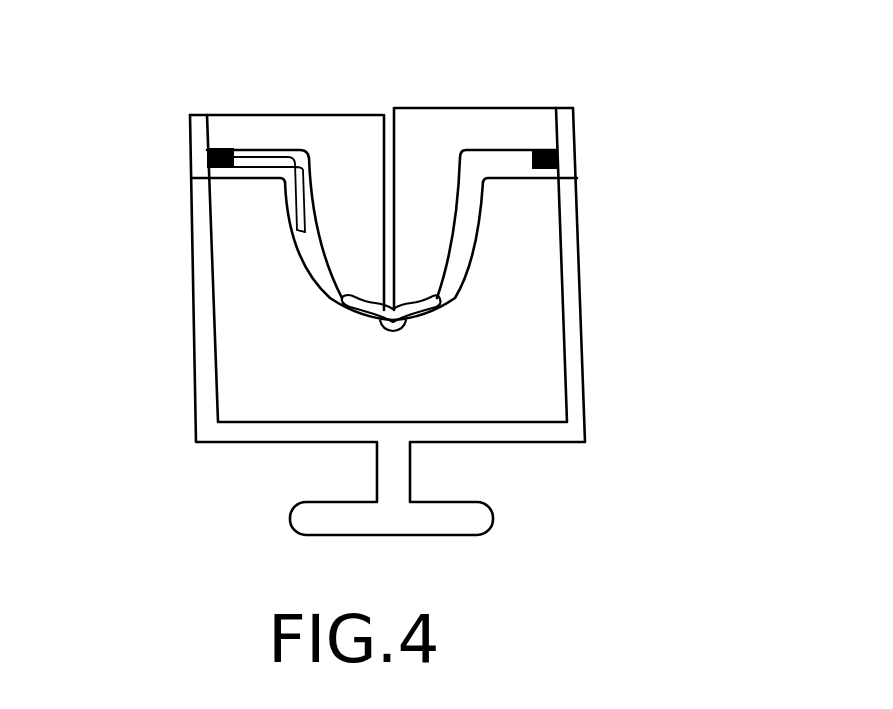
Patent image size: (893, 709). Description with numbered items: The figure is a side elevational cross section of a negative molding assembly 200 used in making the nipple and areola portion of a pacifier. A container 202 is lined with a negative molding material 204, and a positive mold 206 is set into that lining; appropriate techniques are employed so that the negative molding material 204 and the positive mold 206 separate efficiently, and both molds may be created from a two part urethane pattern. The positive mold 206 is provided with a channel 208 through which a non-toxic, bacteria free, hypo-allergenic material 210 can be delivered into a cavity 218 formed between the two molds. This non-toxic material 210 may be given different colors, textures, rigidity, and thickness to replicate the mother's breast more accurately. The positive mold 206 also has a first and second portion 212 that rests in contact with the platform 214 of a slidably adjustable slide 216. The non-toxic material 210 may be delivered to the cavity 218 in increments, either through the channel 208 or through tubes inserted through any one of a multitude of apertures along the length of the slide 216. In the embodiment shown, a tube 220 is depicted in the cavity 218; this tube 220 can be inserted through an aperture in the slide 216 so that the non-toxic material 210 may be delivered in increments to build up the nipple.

The negative molding assembly 200 is at (598, 243).
The container 202 is at (573, 347).
The negative molding material 204 is at (250, 275).
The positive mold 206 is at (332, 140).
The channel 208 is at (386, 168).
The non-toxic material 210 is at (445, 306).
The first and second portion 212 is at (505, 122).
The platform 214 is at (540, 157).
The slide 216 is at (200, 125).
The cavity 218 is at (315, 263).
The tube 220 is at (290, 197).